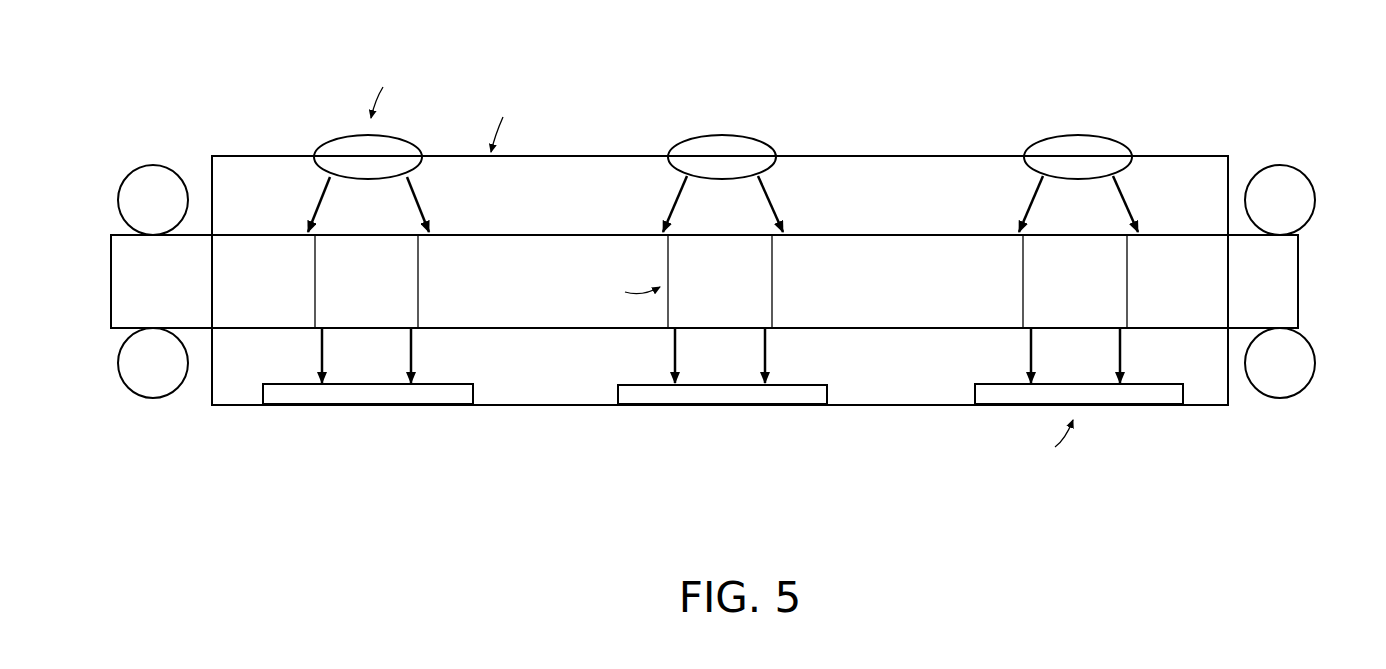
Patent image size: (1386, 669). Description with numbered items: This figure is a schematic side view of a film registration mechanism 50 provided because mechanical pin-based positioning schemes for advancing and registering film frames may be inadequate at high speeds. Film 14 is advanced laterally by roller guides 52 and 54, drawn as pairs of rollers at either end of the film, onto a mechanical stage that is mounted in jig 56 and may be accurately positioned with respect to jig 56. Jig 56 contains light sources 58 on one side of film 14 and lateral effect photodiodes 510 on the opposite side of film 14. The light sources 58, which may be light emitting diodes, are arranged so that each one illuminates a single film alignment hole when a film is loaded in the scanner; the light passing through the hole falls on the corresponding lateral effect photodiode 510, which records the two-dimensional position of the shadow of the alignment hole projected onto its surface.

The film registration mechanism 50 is at (1232, 86).
The roller guide 52 is at (119, 196).
The roller guide 54 is at (1315, 202).
The film 14 is at (1299, 287).
The jig 56 is at (583, 155).
The light source 58 is at (727, 132).
The lateral effect photodiode 510 is at (718, 393).